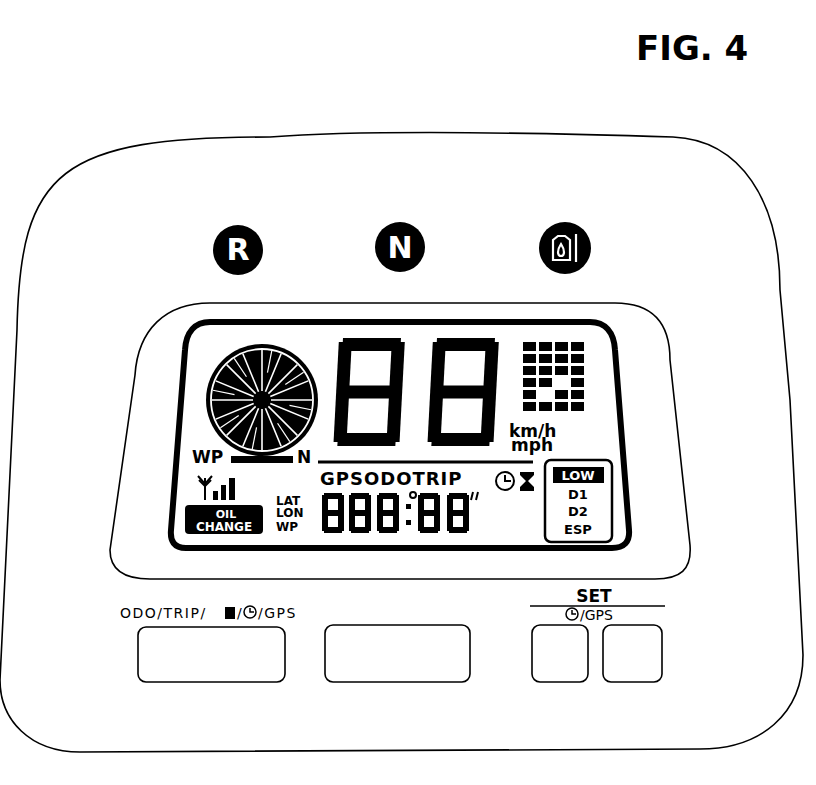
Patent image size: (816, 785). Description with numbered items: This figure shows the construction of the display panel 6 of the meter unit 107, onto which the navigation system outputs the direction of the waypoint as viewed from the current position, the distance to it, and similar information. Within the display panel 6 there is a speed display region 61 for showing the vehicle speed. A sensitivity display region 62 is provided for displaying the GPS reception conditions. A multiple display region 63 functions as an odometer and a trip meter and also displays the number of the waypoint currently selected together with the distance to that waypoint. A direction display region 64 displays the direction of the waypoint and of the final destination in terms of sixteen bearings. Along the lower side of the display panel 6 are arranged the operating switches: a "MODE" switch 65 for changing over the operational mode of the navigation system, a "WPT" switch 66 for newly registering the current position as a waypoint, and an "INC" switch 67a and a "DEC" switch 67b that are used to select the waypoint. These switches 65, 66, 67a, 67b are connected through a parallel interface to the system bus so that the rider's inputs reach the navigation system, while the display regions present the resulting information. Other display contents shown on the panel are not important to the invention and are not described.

The meter unit 107 is at (457, 132).
The display panel 6 is at (683, 432).
The speed display region 61 is at (430, 335).
The sensitivity display region 62 is at (190, 488).
The multiple display region 63 is at (403, 540).
The direction display region 64 is at (278, 343).
The "MODE" switch 65 is at (236, 677).
The "WPT" switch 66 is at (437, 672).
The "INC" switch 67a is at (540, 680).
The "DEC" switch 67b is at (620, 675).